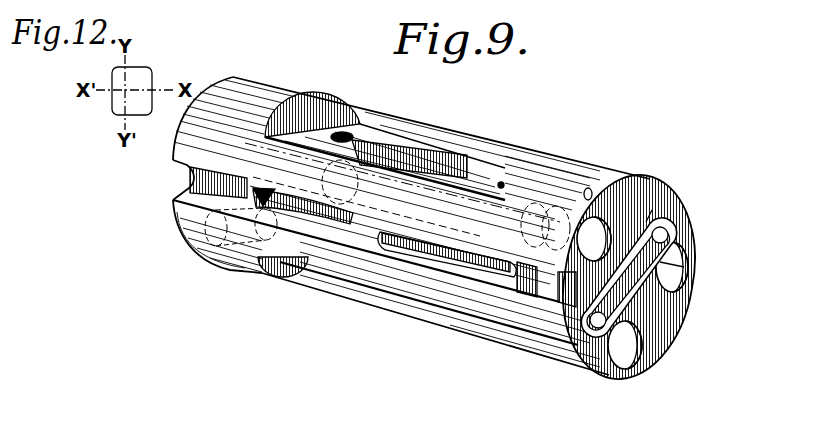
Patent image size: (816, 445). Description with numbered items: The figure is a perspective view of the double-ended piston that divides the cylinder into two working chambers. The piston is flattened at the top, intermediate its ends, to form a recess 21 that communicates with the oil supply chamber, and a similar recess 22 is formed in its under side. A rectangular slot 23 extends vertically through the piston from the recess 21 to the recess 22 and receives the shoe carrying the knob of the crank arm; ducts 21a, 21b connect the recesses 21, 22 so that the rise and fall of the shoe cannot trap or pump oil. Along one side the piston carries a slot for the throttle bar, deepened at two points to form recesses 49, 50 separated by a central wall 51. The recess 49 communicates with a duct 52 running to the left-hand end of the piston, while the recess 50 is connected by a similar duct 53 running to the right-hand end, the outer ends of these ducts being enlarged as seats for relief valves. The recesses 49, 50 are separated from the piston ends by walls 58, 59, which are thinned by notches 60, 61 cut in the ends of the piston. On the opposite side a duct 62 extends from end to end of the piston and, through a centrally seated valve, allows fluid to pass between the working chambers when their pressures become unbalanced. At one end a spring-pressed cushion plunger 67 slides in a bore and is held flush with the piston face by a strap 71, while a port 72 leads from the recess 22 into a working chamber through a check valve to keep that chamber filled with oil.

The recess 21 is at (346, 134).
The duct 21a is at (505, 178).
The duct 21b is at (355, 138).
The slot 23 is at (440, 165).
The duct 53 is at (598, 228).
The port 72 is at (637, 362).
The duct 62 is at (683, 287).
The cushion plunger 67 is at (640, 285).
The strap 71 is at (640, 215).
The duct 52 is at (368, 268).
The recess 49 is at (472, 262).
The wall 58 is at (513, 273).
The notch 60 is at (563, 277).
The central wall 51 is at (312, 248).
The recess 22 is at (293, 280).
The recess 50 is at (257, 270).
The wall 59 is at (200, 203).
The notch 61 is at (192, 180).